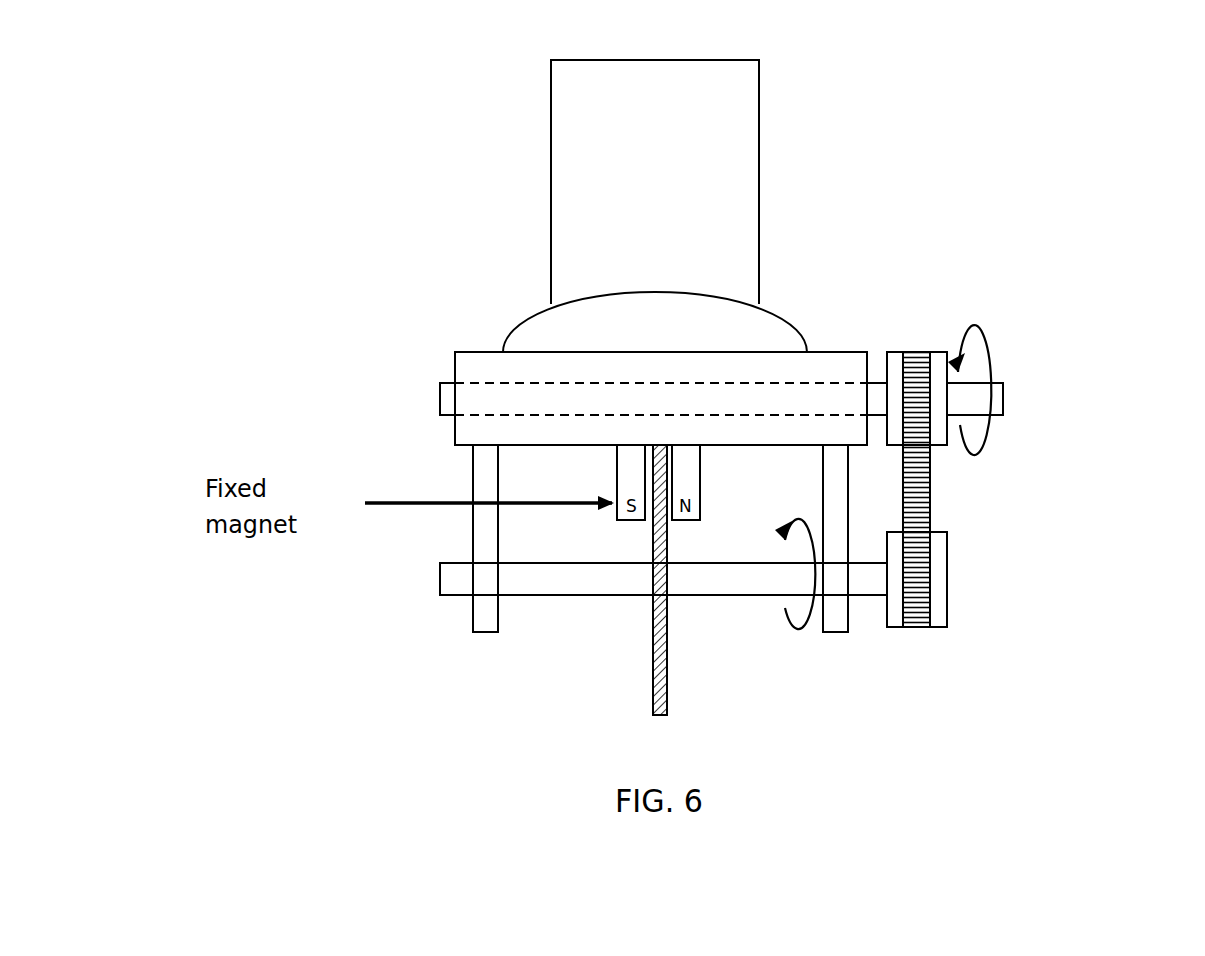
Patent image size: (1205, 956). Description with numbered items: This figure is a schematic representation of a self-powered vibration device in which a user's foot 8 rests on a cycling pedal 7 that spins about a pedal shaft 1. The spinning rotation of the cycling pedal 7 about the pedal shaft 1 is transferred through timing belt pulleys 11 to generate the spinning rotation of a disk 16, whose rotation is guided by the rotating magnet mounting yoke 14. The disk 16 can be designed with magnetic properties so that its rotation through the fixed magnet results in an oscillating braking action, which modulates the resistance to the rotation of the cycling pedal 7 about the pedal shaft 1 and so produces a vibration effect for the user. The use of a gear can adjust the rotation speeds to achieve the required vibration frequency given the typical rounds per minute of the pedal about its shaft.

The pedal shaft 1 is at (1085, 303).
The cycling pedal 7 is at (452, 367).
The foot 8 is at (655, 206).
The timing belt pulleys 11 is at (952, 458).
The rotating magnet mounting yoke 14 is at (470, 620).
The disk 16 is at (648, 693).